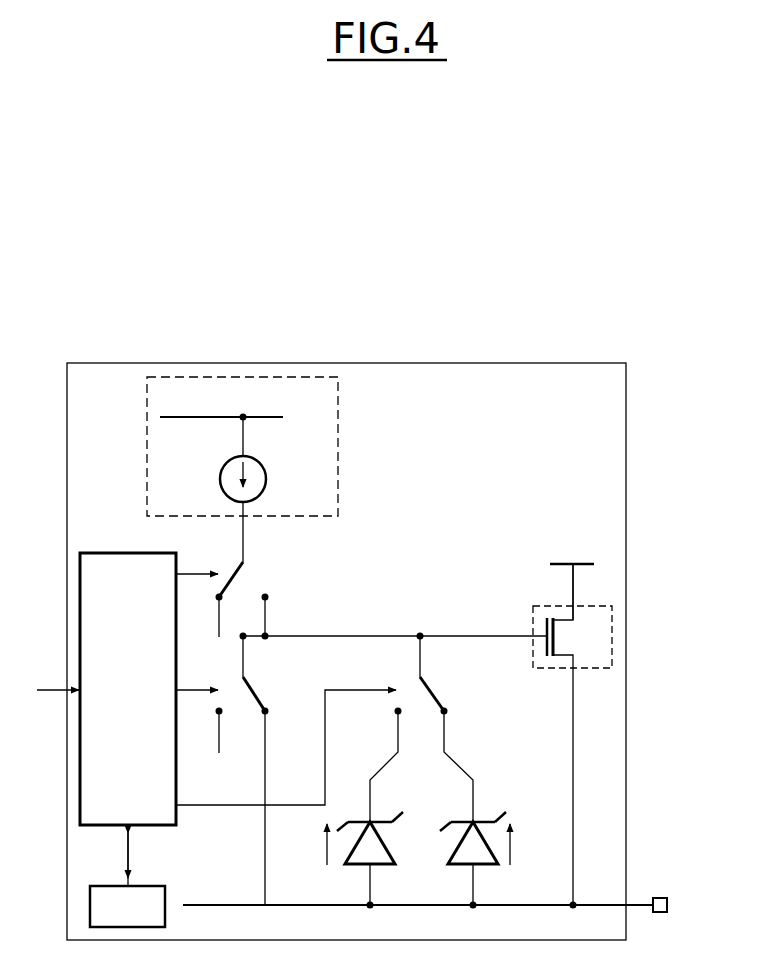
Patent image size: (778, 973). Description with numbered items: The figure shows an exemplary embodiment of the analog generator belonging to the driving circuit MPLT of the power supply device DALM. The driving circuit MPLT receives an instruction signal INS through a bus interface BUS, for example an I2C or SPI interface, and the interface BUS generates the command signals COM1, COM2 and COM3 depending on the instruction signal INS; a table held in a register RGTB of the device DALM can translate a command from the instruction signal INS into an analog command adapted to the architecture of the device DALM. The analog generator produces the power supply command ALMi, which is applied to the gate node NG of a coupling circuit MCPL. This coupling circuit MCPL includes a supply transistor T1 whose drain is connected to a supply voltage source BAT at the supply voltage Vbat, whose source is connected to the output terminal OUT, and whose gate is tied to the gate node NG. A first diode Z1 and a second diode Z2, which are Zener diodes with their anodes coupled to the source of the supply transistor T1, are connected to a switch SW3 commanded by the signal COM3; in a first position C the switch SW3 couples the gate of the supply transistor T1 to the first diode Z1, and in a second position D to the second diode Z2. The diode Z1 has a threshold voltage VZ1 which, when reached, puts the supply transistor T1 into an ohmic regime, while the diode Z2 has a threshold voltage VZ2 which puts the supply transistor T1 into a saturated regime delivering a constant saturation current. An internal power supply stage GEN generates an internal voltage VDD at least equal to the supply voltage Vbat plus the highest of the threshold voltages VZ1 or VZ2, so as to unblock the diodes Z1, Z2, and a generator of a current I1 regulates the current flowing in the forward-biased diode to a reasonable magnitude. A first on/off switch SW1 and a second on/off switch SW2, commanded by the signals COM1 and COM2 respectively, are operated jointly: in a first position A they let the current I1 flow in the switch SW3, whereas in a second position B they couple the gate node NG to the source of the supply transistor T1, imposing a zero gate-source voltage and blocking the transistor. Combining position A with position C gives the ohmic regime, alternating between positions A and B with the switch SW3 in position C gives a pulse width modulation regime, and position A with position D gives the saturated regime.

The power supply device DALM is at (347, 362).
The internal power supply stage GEN is at (147, 445).
The current I1 is at (268, 478).
The internal voltage VDD is at (221, 406).
The driving circuit MPLT is at (432, 471).
The bus interface BUS is at (106, 552).
The command signal COM1 is at (164, 575).
The command signal COM2 is at (164, 690).
The command signal COM3 is at (251, 754).
The instruction signal INS is at (49, 677).
The first on/off switch SW1 is at (235, 580).
The second on/off switch SW2 is at (253, 695).
The switch SW3 is at (435, 690).
The first position A is at (242, 668).
The second position B is at (243, 653).
The first position C is at (452, 710).
The second position D is at (390, 710).
The gate node NG is at (420, 630).
The power supply command signal ALMi is at (499, 630).
The supply voltage source BAT is at (557, 567).
The supply voltage Vbat is at (571, 551).
The supply transistor T1 is at (573, 736).
The coupling circuit MCPL is at (612, 625).
The first diode Z1 is at (489, 866).
The second diode Z2 is at (352, 866).
The threshold voltage VZ1 is at (533, 844).
The threshold voltage VZ2 is at (304, 844).
The register RGTB is at (127, 876).
The output terminal OUT is at (668, 905).